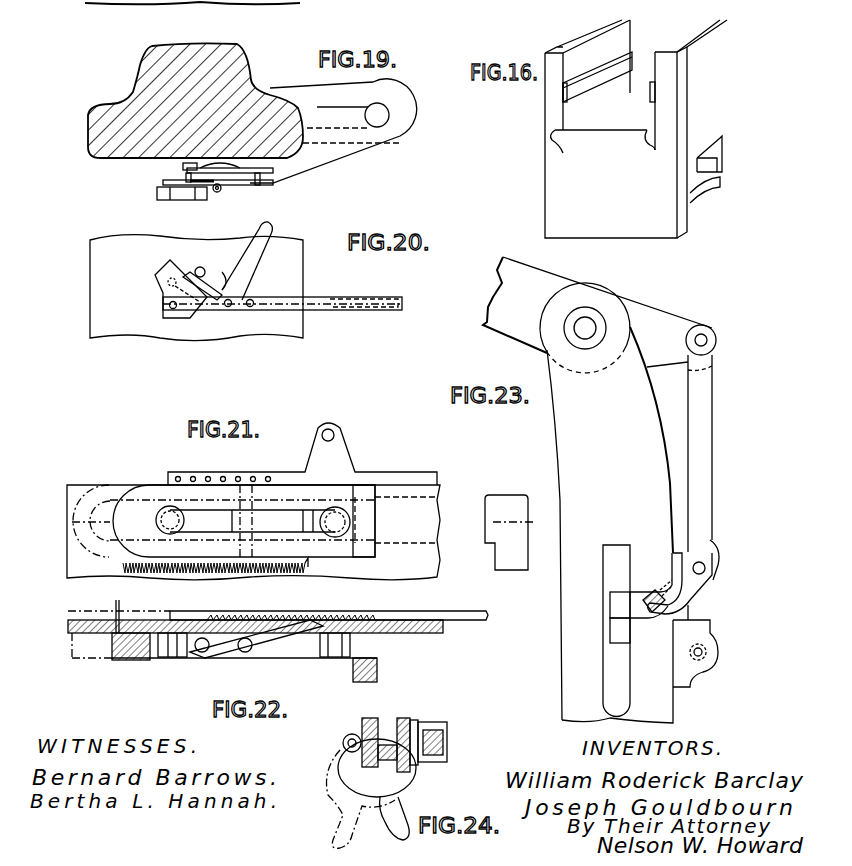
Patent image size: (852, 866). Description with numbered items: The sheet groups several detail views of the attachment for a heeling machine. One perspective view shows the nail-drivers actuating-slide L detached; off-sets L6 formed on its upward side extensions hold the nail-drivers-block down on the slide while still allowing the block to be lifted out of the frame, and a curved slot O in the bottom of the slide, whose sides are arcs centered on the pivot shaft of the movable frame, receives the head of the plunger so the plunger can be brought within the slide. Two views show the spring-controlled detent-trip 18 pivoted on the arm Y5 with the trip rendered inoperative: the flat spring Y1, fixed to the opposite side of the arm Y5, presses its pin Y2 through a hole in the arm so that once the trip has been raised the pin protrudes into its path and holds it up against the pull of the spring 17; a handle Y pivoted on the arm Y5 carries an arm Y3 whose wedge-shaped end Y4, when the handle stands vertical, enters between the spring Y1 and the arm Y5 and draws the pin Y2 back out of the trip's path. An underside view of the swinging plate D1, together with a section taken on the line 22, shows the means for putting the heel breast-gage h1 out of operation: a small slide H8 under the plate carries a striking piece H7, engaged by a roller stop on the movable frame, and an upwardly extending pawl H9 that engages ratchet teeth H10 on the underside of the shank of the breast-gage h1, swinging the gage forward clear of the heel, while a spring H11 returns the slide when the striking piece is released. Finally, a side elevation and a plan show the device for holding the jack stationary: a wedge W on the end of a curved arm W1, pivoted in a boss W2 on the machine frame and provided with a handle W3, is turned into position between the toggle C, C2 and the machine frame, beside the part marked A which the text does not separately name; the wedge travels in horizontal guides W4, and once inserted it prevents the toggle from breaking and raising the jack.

In FIG. 19, the handle Y is at (270, 170).
In FIG. 20, the handle Y is at (250, 262).
In FIG. 19, the flat spring Y1 is at (227, 177).
In FIG. 19, the pin Y2 is at (187, 170).
In FIG. 20, the pin Y2 is at (168, 305).
In FIG. 19, the arm Y3 is at (222, 180).
In FIG. 20, the arm Y3 is at (226, 280).
In FIG. 19, the wedge-shaped end Y4 is at (190, 167).
In FIG. 20, the wedge-shaped end Y4 is at (203, 270).
In FIG. 20, the trip-carrying arm Y5 is at (348, 307).
In FIG. 19, the spring 17 is at (197, 193).
In FIG. 20, the spring 17 is at (198, 270).
In FIG. 19, the trip 18 is at (157, 193).
In FIG. 20, the trip 18 is at (157, 270).
In FIG. 16, the nail-drivers actuating-slide L is at (565, 187).
In FIG. 16, the off-set L6 is at (562, 98).
In FIG. 16, the curved slot O is at (708, 167).
In FIG. 23, the arm A is at (593, 453).
In FIG. 23, the toggle lever C is at (710, 422).
In FIG. 24, the toggle lever C is at (447, 740).
In FIG. 23, the toggle lever C2 is at (705, 625).
In FIG. 23, the wedge W is at (683, 568).
In FIG. 24, the wedge W is at (418, 728).
In FIG. 23, the curved arm W1 is at (617, 607).
In FIG. 24, the curved arm W1 is at (415, 785).
In FIG. 23, the boss W2 is at (618, 635).
In FIG. 24, the boss W2 is at (350, 735).
In FIG. 23, the handle W3 is at (662, 602).
In FIG. 24, the handle W3 is at (395, 823).
In FIG. 23, the horizontal guides W4 is at (682, 552).
In FIG. 24, the horizontal guides W4 is at (407, 717).
In FIG. 21, the section line 22 is at (72, 522).
In FIG. 21, the striking piece H7 is at (408, 523).
In FIG. 22, the striking piece H7 is at (377, 675).
In FIG. 21, the slide H8 is at (143, 490).
In FIG. 22, the slide H8 is at (130, 660).
In FIG. 21, the pawl H9 is at (288, 518).
In FIG. 22, the pawl H9 is at (275, 640).
In FIG. 21, the ratchet teeth H10 is at (330, 507).
In FIG. 22, the ratchet teeth H10 is at (335, 657).
In FIG. 21, the spring H11 is at (130, 570).
In FIG. 21, the swinging plate D1 is at (440, 497).
In FIG. 22, the swinging plate D1 is at (415, 632).
In FIG. 21, the breast-gage h1 is at (500, 495).
In FIG. 22, the breast-gage h1 is at (470, 618).